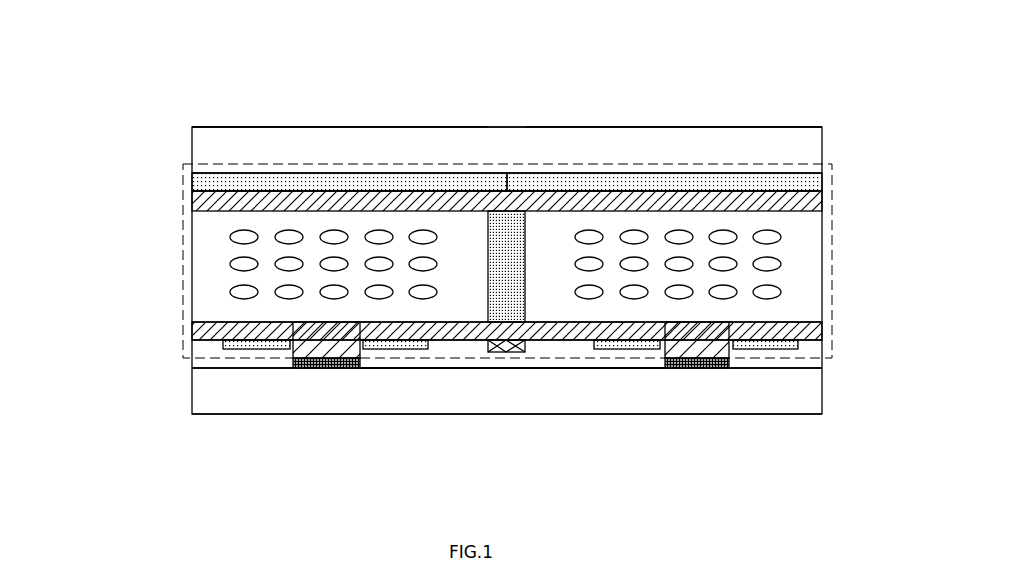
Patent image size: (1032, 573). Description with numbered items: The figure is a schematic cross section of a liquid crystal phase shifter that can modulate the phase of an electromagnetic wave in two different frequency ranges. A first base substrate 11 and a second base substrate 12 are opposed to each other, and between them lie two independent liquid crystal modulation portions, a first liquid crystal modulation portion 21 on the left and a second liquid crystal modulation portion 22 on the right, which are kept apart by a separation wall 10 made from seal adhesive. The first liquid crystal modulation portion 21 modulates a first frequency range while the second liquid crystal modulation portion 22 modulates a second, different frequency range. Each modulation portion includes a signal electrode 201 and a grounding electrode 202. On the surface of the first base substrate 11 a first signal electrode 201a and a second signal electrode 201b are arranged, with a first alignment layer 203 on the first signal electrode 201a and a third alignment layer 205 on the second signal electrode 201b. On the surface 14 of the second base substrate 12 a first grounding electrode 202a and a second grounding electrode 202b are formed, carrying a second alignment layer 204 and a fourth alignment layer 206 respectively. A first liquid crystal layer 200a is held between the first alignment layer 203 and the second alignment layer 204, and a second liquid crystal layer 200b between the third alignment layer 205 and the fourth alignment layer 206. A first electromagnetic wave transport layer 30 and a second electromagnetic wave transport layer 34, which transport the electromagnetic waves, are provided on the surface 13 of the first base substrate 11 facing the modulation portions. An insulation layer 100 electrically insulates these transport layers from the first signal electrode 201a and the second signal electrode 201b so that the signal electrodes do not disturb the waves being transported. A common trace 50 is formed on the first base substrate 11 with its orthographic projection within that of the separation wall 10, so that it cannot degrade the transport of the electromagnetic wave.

The first base substrate 11 is at (192, 403).
The second base substrate 12 is at (192, 143).
The surface of the first base substrate 13 is at (630, 368).
The surface of the second base substrate 14 is at (713, 173).
The first liquid crystal modulation portion 21 is at (343, 164).
The second liquid crystal modulation portion 22 is at (633, 164).
The first electromagnetic wave transport layer 30 is at (327, 368).
The second electromagnetic wave transport layer 34 is at (715, 368).
The common trace 50 is at (508, 352).
The insulation layer 100 is at (202, 355).
The first liquid crystal layer 200a is at (210, 272).
The second liquid crystal layer 200b is at (807, 252).
The signal electrode 201 is at (510, 415).
The first signal electrode 201a is at (400, 349).
The second signal electrode 201b is at (687, 393).
The grounding electrode 202 is at (507, 102).
The first grounding electrode 202a is at (440, 173).
The second grounding electrode 202b is at (562, 182).
The first alignment layer 203 is at (197, 328).
The second alignment layer 204 is at (198, 197).
The third alignment layer 205 is at (820, 328).
The fourth alignment layer 206 is at (820, 200).
The separation wall 10 is at (508, 211).